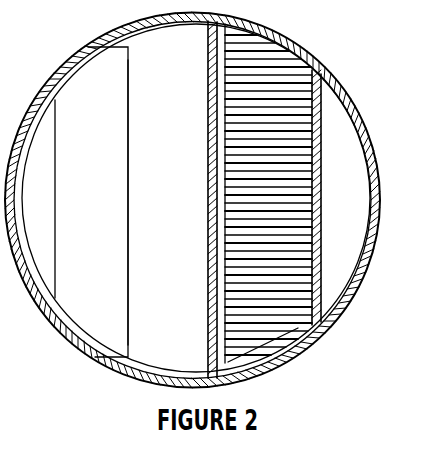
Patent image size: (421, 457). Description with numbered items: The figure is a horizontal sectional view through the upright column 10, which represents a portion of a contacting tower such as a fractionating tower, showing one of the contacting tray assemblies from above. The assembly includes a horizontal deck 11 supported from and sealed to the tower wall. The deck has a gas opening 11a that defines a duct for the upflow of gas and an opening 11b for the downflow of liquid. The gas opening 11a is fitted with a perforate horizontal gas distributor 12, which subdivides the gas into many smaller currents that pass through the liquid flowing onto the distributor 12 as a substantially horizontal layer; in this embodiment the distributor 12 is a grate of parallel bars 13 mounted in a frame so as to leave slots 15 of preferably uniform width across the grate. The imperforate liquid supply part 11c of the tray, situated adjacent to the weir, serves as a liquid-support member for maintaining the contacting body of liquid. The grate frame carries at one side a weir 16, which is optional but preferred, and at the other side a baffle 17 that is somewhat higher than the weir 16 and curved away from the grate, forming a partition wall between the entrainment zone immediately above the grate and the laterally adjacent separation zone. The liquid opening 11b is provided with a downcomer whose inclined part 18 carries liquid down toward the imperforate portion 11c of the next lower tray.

The upright column 10 is at (323, 67).
The horizontal deck 11 is at (176, 275).
The gas opening 11a is at (296, 330).
The liquid opening 11b is at (134, 87).
The imperforate liquid supply part 11c is at (352, 262).
The perforate horizontal gas distributor 12 is at (348, 136).
The parallel bars 13 is at (300, 150).
The slots 15 is at (303, 194).
The weir 16 is at (321, 240).
The baffle 17 is at (208, 236).
The inclined part 18 is at (66, 97).